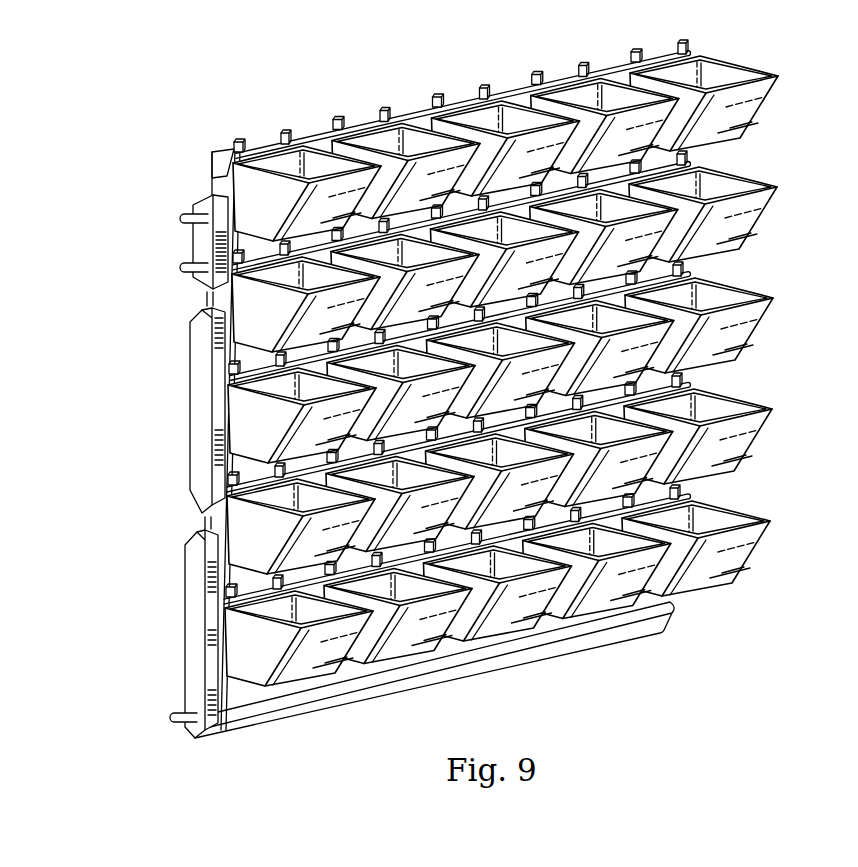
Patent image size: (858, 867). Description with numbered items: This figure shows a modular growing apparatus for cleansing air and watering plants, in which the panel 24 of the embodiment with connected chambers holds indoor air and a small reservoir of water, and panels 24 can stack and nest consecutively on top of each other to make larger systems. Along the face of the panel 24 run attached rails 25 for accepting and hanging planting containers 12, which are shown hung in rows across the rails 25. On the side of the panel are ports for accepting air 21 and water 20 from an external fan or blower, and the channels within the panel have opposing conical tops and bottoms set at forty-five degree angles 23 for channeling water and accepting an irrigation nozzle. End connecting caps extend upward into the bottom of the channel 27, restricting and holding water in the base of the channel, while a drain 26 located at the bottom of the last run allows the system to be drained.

The planter pot 12 is at (750, 274).
The water port (end cap) 20 is at (182, 268).
The air port 21 is at (185, 216).
The 45 degree angle (conical channel end) 23 is at (206, 482).
The panel 24 is at (223, 152).
The rail 25 is at (464, 102).
The drain 26 is at (172, 714).
The channel bottom (end connecting cap extension) 27 is at (198, 556).